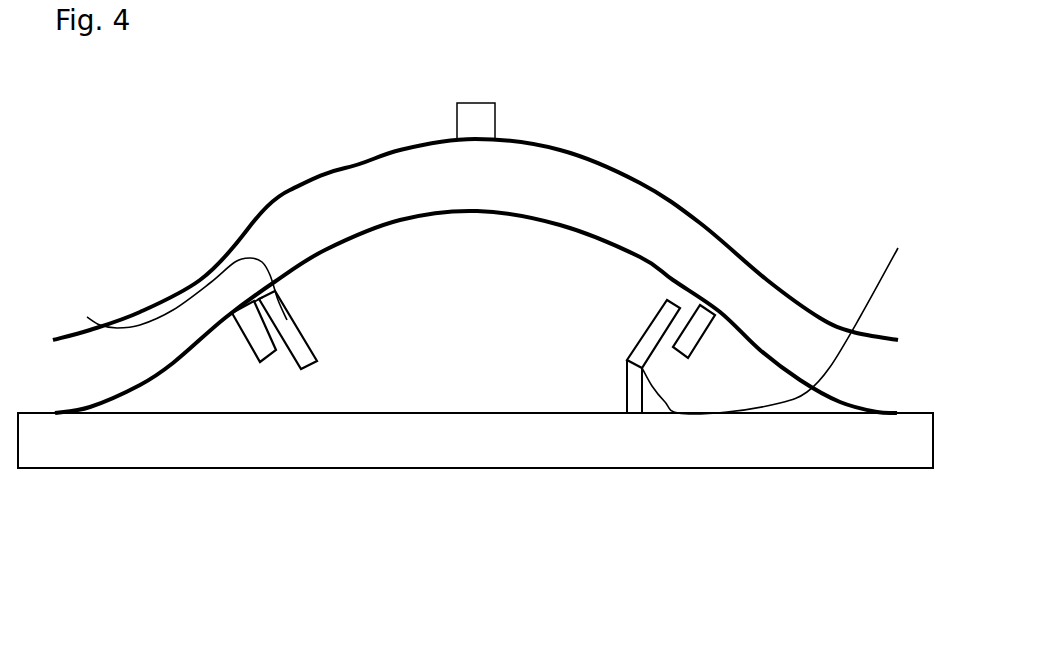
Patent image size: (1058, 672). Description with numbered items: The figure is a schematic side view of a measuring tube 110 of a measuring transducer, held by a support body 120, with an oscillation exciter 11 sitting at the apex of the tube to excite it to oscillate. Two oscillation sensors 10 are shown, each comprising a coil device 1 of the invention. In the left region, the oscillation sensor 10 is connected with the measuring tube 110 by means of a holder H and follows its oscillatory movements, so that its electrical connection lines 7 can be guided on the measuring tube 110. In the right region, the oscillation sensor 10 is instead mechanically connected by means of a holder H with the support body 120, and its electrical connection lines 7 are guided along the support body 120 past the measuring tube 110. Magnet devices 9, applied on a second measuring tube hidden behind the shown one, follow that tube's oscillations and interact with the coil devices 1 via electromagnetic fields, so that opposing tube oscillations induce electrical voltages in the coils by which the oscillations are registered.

The coil device 1 is at (323, 357).
The electrical connection lines 7 is at (147, 322).
The magnet devices 9 is at (253, 350).
The oscillation sensors 10 is at (274, 377).
The oscillation exciter 11 is at (512, 103).
The measuring tube 110 is at (773, 235).
The support body 120 is at (530, 450).
The holder H is at (263, 287).